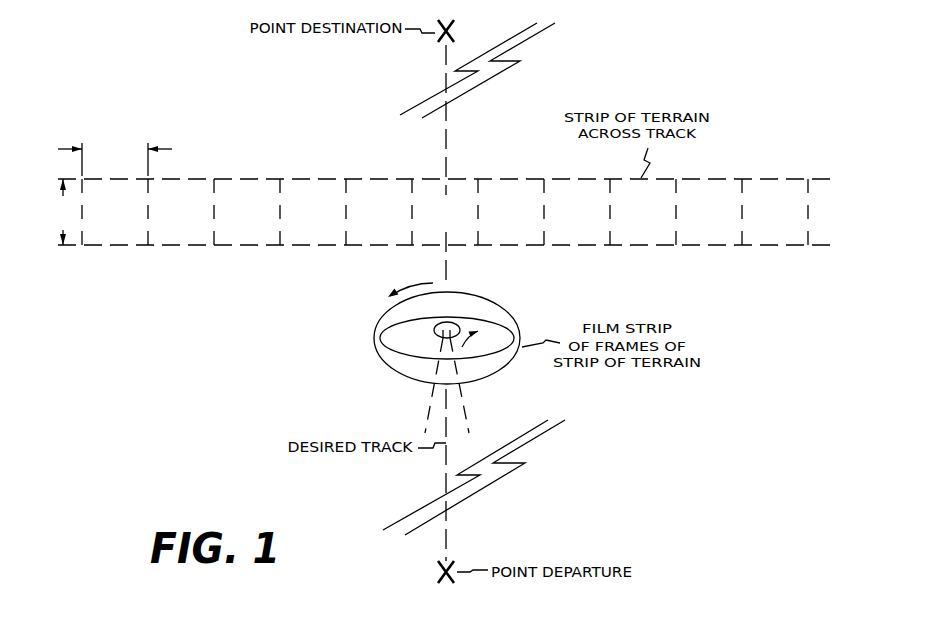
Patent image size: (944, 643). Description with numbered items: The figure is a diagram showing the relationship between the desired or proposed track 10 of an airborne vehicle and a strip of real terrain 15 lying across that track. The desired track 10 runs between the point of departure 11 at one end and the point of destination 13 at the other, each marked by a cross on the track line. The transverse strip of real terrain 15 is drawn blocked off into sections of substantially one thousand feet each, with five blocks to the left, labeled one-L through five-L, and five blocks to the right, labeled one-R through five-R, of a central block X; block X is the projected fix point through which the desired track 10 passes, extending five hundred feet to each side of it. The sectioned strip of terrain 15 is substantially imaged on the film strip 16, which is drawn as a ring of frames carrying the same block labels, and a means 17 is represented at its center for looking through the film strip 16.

The desired track 10 is at (445, 478).
The point of departure 11 is at (440, 570).
The point of destination 13 is at (456, 31).
The strip of real terrain 15 is at (311, 178).
The film strip 16 is at (374, 330).
The means for looking through the film strip 17 is at (433, 330).